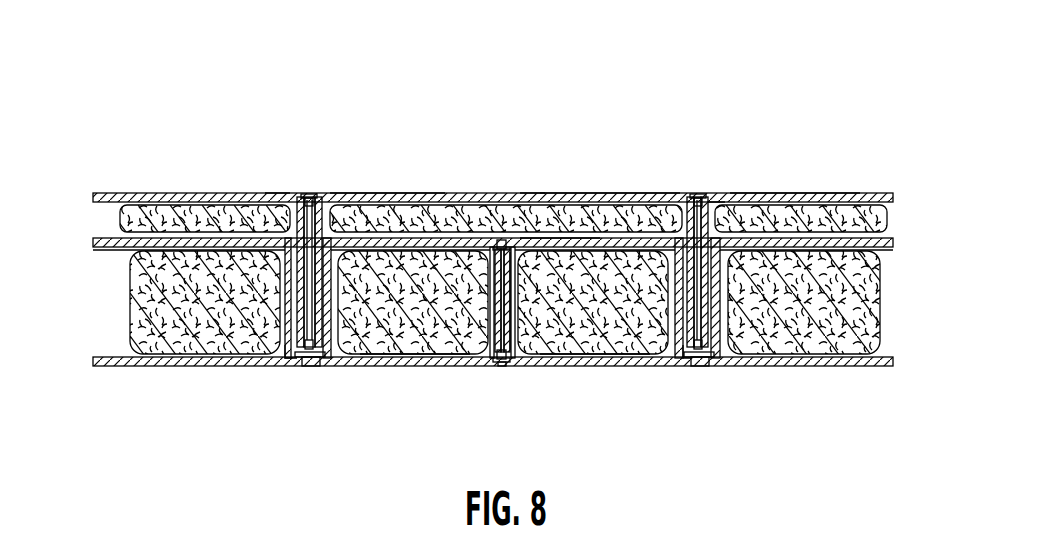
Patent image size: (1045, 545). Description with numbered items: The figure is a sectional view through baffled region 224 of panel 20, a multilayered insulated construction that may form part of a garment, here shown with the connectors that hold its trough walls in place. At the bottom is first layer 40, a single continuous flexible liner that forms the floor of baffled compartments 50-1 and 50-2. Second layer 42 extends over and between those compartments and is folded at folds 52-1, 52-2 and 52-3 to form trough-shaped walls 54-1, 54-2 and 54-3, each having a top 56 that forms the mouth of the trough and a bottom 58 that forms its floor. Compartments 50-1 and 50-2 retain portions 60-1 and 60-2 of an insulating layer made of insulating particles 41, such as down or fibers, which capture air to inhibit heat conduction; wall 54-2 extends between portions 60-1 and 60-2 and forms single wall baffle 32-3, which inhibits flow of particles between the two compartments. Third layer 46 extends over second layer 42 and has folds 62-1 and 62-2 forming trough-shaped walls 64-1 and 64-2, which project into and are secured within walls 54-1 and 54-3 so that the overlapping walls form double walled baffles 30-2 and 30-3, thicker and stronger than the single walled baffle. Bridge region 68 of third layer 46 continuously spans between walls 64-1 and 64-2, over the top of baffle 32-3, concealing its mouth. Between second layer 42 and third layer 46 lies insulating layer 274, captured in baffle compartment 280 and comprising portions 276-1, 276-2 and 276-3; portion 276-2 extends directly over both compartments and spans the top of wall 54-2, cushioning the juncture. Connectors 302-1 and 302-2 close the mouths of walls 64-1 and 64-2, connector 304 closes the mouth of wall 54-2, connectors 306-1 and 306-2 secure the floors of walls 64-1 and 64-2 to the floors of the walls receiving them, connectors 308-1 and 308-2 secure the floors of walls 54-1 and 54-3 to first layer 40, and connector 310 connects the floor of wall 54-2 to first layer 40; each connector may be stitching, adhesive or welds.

The panel 20 is at (78, 98).
The baffled region 224 is at (68, 172).
The insulating layer 274 is at (902, 210).
The third layer 46 is at (866, 193).
The first layer 40 is at (168, 368).
The second layer 42 is at (868, 258).
The insulating particles 41 is at (447, 335).
The trough-shaped wall 54-1 is at (386, 193).
The trough-shaped wall 54-2 is at (565, 193).
The trough-shaped wall 54-3 is at (778, 193).
The top 56 is at (275, 193).
The portion of insulating layer 274 276-1 is at (170, 192).
The portion of insulating layer 274 276-2 is at (460, 193).
The portion of insulating layer 274 276-3 is at (829, 208).
The fold 52-1 is at (290, 228).
The fold 52-2 is at (492, 246).
The fold 52-3 is at (684, 217).
The fold 62-1 is at (323, 218).
The fold 62-2 is at (712, 220).
The connector 302-1 is at (307, 193).
The connector 302-2 is at (697, 194).
The baffle compartment 280 is at (327, 193).
The trough-shaped wall 64-1 is at (290, 320).
The trough-shaped wall 64-2 is at (712, 310).
The double walled baffle 30-2 is at (333, 352).
The double walled baffle 30-3 is at (723, 352).
The connector 306-1 is at (297, 359).
The connector 306-2 is at (688, 355).
The connector 308-1 is at (310, 355).
The connector 308-2 is at (703, 356).
The bottom 58 is at (286, 347).
The portion of insulating layer 60-1 is at (403, 338).
The portion of insulating layer 60-2 is at (612, 345).
The baffled compartment 50-1 is at (487, 354).
The baffled compartment 50-2 is at (623, 358).
The connector 304 is at (499, 240).
The connector 310 is at (500, 361).
The single wall baffle 32-3 is at (520, 295).
The bridge region 68 is at (545, 230).